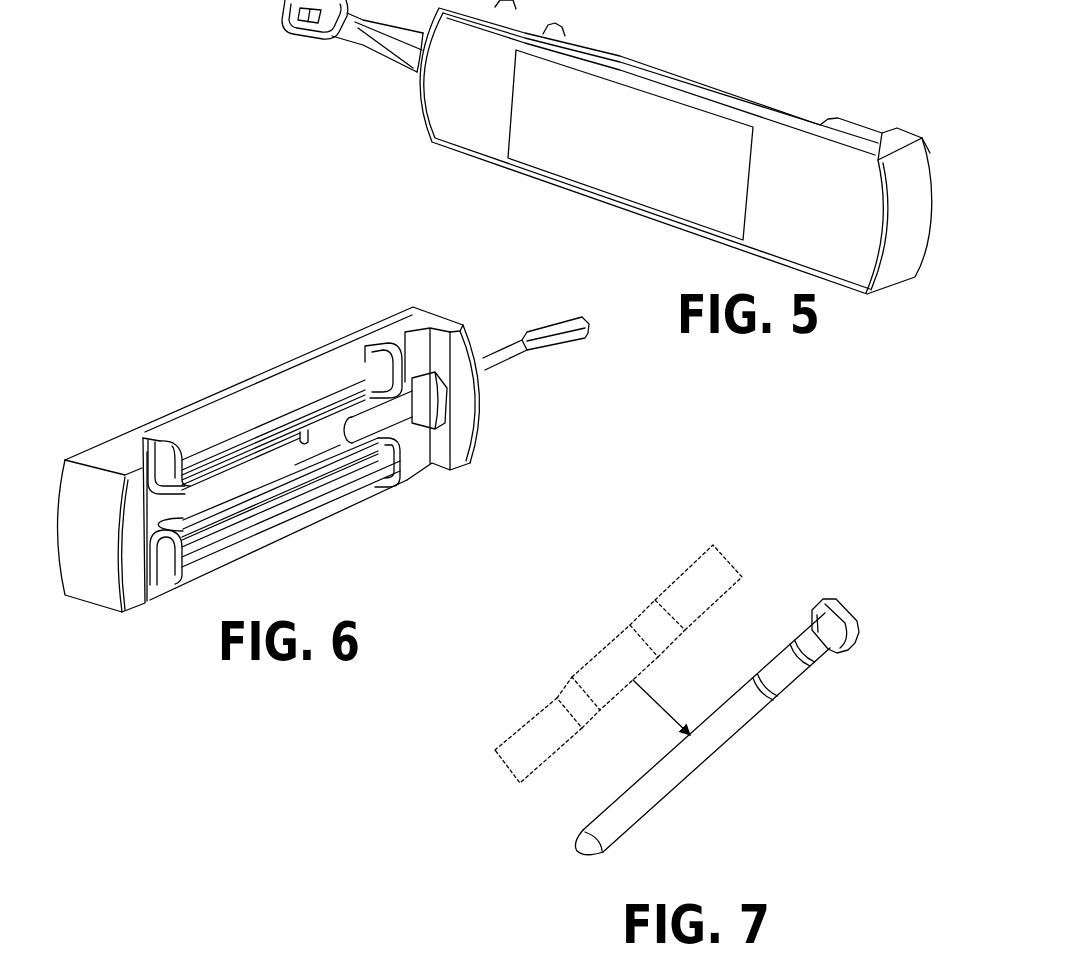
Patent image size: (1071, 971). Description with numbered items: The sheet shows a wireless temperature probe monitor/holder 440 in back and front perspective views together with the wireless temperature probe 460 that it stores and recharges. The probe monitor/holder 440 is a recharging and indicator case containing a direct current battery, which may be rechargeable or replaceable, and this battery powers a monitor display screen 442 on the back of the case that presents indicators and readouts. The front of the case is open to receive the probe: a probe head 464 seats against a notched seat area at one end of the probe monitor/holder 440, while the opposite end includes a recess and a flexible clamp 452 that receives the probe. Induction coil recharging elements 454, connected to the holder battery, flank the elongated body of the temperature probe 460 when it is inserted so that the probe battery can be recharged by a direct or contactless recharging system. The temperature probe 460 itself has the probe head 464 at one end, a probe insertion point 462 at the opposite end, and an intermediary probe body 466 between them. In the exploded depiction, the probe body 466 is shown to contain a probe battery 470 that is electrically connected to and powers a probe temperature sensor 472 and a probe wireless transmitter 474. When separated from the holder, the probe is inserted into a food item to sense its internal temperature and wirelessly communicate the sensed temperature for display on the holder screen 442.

In FIG. 5, the wireless temperature probe monitor/holder 440 is at (868, 125).
In FIG. 6, the wireless temperature probe monitor/holder 440 is at (284, 362).
In FIG. 5, the monitor display screen 442 is at (565, 108).
In FIG. 6, the flexible clamp 452 is at (305, 473).
In FIG. 6, the induction coil recharging elements 454 is at (165, 447).
In FIG. 6, the wireless temperature probe 460 is at (448, 425).
In FIG. 7, the wireless temperature probe 460 is at (697, 698).
In FIG. 7, the probe insertion point 462 is at (578, 850).
In FIG. 7, the probe head 464 is at (855, 605).
In FIG. 7, the probe body 466 is at (753, 713).
In FIG. 7, the probe battery 470 is at (517, 725).
In FIG. 7, the probe temperature sensor 472 is at (600, 648).
In FIG. 7, the probe wireless transmitter 474 is at (687, 563).